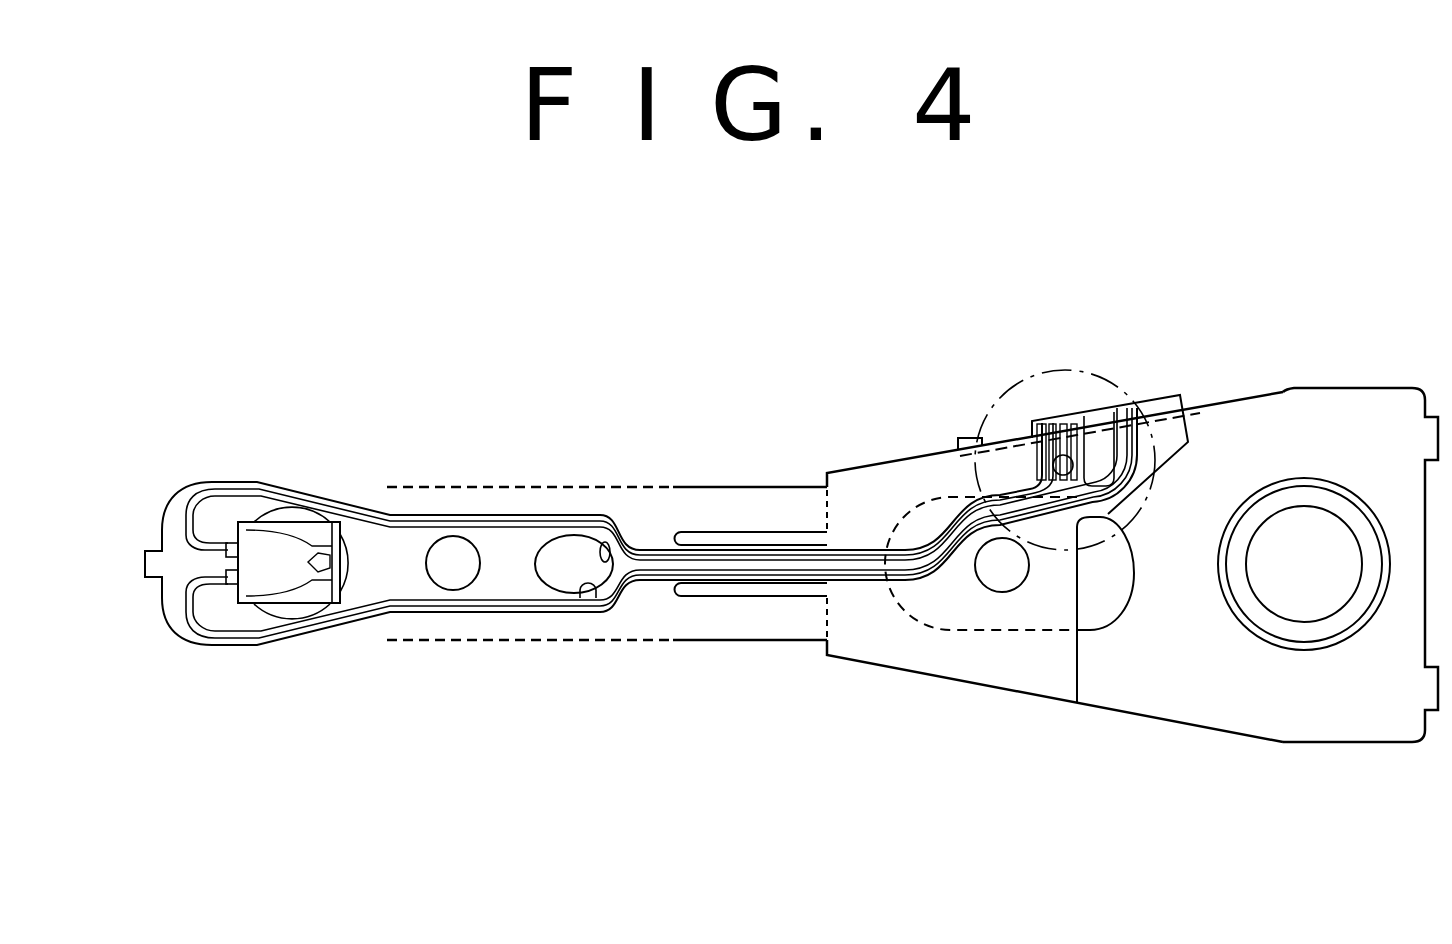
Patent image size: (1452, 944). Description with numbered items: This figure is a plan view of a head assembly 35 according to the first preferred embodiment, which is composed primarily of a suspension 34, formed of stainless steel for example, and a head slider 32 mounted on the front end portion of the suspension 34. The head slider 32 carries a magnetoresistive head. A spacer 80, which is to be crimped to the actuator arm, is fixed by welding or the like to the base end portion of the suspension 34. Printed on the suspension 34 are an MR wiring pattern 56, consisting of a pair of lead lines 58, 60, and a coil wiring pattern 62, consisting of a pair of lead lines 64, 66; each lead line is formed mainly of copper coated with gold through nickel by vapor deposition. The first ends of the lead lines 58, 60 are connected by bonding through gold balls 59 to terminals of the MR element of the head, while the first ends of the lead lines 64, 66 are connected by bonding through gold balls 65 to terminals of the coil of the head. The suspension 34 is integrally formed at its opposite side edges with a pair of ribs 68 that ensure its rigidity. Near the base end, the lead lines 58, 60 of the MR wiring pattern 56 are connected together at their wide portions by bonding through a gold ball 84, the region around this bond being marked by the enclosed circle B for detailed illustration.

The head slider 32 is at (290, 596).
The suspension 34 is at (746, 645).
The head assembly 35 is at (759, 470).
The MR wiring pattern 56 is at (473, 513).
The lead line 58 is at (610, 548).
The gold balls 59 is at (237, 546).
The lead line 60 is at (568, 513).
The coil wiring pattern 62 is at (432, 613).
The lead line 64 is at (596, 600).
The gold balls 65 is at (231, 583).
The lead line 66 is at (530, 617).
The ribs 68 is at (433, 484).
The spacer 80 is at (1182, 688).
The gold ball 84 is at (1057, 460).
The detail region B is at (1067, 372).